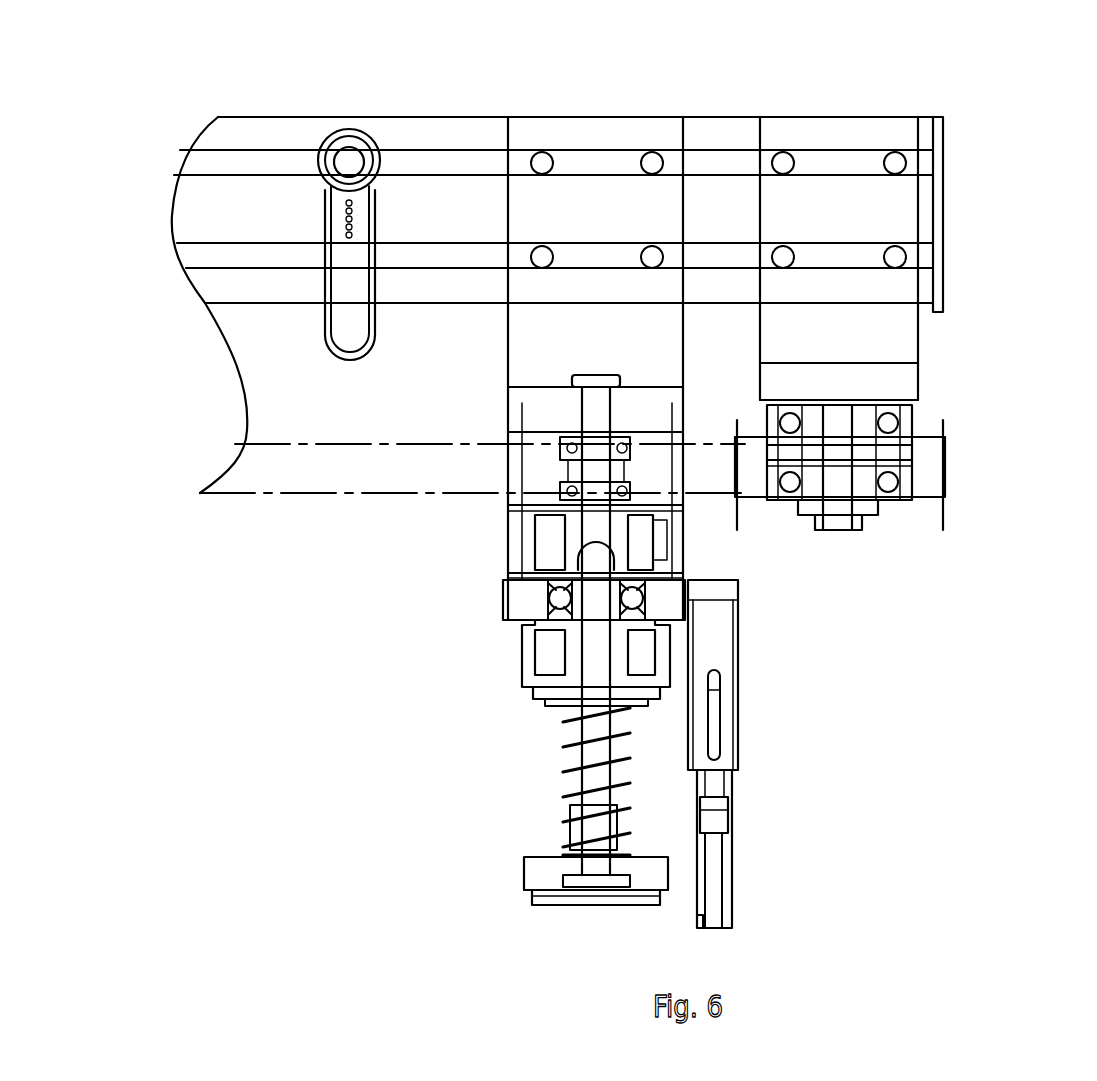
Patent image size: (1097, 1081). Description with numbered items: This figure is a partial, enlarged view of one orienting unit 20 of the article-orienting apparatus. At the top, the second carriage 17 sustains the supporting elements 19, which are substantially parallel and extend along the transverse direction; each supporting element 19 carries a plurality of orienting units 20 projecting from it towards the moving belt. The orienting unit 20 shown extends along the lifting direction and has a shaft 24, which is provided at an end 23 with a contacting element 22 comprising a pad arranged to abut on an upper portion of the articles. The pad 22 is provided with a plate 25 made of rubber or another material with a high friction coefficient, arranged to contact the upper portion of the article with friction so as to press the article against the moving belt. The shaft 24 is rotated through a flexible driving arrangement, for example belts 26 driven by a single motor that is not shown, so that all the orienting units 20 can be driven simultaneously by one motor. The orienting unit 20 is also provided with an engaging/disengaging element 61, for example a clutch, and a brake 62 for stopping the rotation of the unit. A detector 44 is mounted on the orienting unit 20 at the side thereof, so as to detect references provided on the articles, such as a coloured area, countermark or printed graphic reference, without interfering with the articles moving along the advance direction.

The second carriage 17 is at (202, 217).
The supporting element 19 is at (590, 130).
The orienting unit 20 is at (360, 660).
The contacting element 22 is at (535, 878).
The end 23 is at (497, 873).
The shaft 24 is at (593, 653).
The plate 25 is at (548, 897).
The belt 26 is at (240, 470).
The detector 44 is at (760, 858).
The engaging/disengaging element 61 is at (553, 536).
The brake 62 is at (550, 650).